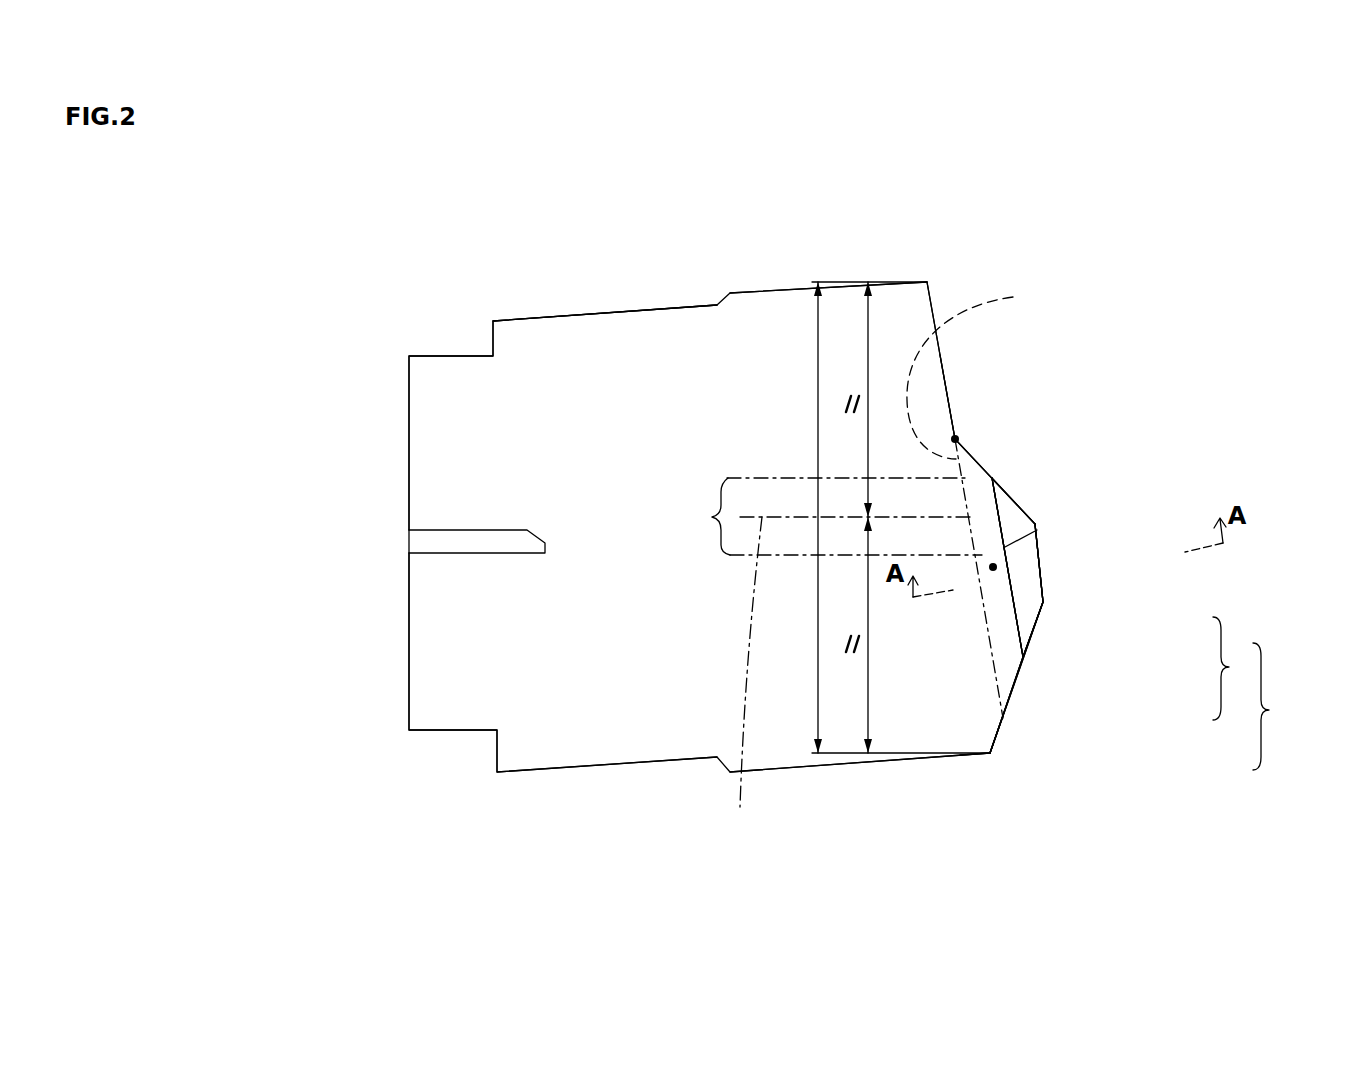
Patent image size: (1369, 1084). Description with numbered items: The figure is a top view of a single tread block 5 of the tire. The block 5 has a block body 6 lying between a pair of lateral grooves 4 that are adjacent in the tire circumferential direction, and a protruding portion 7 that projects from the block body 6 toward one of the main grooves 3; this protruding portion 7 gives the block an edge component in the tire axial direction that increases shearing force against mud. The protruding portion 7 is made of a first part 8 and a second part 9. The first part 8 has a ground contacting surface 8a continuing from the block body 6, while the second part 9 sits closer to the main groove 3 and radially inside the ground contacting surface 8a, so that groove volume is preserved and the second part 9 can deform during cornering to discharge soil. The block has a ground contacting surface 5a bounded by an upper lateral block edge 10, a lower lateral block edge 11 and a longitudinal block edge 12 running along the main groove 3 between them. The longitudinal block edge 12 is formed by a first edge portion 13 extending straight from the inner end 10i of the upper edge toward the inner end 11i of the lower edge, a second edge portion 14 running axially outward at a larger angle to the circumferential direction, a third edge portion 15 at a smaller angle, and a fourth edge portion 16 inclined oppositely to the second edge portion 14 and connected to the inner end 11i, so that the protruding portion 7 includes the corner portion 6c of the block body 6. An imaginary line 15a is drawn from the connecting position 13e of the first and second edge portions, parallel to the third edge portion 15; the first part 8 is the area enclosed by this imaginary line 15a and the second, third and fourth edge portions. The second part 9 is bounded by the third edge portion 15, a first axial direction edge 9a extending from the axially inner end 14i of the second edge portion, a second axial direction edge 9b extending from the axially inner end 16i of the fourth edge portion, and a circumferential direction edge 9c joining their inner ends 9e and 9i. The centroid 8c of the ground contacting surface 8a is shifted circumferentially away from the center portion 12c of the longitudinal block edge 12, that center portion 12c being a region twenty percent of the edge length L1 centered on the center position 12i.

The main groove 3 is at (1059, 808).
The lateral groove 4 is at (603, 270).
The block 5 is at (1294, 706).
The ground contacting surface 5a is at (1261, 706).
The block body 6 is at (933, 708).
The corner portion 6c is at (975, 771).
The protruding portion 7 is at (1229, 668).
The first part 8 is at (1097, 615).
The ground contacting surface 8a is at (1008, 655).
The centroid 8c is at (993, 567).
The second part 9 is at (1025, 593).
The first axial direction edge 9a is at (1017, 503).
The second axial direction edge 9b is at (1045, 608).
The circumferential direction edge 9c is at (1041, 560).
The inner end 9e is at (1037, 525).
The inner end 9i is at (1046, 600).
The lateral block edge 10 is at (451, 355).
The inner end 10i is at (927, 281).
The lateral block edge 11 is at (451, 730).
The inner end 11i is at (992, 757).
The longitudinal block edge 12 is at (996, 316).
The center portion 12c is at (712, 517).
The center position 12i is at (740, 677).
The first edge portion 13 is at (931, 297).
The connecting position 13e is at (958, 436).
The second edge portion 14 is at (974, 457).
The axially inner end 14i is at (993, 477).
The third edge portion 15 is at (1037, 530).
The imaginary line 15a is at (987, 369).
The fourth edge portion 16 is at (1010, 693).
The axially inner end 16i is at (1023, 657).
The length L1 is at (818, 667).